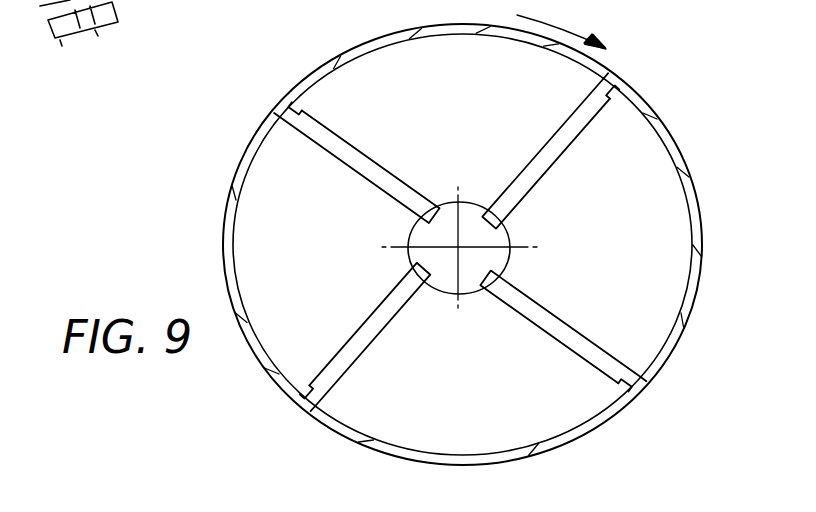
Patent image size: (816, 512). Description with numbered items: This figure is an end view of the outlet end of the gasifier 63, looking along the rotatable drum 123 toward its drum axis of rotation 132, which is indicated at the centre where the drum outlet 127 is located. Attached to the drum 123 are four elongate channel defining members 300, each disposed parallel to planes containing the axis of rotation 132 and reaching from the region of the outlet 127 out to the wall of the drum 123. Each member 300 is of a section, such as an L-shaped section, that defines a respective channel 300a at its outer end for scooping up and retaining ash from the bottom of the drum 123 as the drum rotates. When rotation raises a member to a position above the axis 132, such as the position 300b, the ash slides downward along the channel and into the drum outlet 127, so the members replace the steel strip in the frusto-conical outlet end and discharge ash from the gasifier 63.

The gasifier 63 is at (626, 75).
The rotatable drum 123 is at (222, 258).
The drum outlet 127 is at (497, 267).
The drum axis of rotation 132 is at (455, 246).
The channel defining member 300 is at (518, 173).
The channel 300a is at (283, 110).
The raised position of channel 300b is at (335, 132).